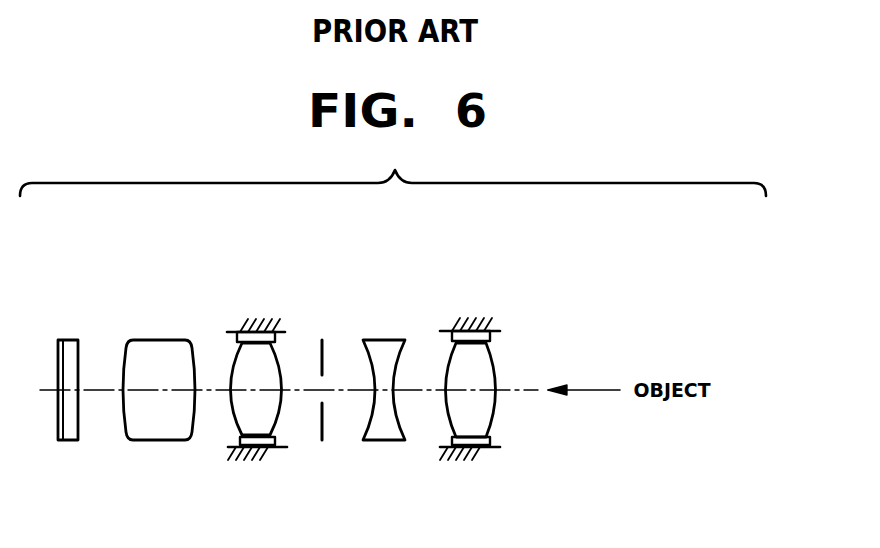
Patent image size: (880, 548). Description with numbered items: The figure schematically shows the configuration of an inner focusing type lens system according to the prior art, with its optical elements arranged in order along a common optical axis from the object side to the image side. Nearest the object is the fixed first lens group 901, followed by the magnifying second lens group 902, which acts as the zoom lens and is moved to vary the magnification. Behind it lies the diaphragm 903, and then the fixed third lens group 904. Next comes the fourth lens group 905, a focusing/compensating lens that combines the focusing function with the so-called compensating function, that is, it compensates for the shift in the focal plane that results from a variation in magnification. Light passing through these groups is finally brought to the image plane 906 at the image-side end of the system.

The fixed first lens group 901 is at (470, 318).
The magnifying second lens group 902 is at (385, 340).
The diaphragm 903 is at (322, 340).
The fixed third lens group 904 is at (257, 318).
The fourth lens group 905 is at (158, 338).
The image plane 906 is at (72, 338).